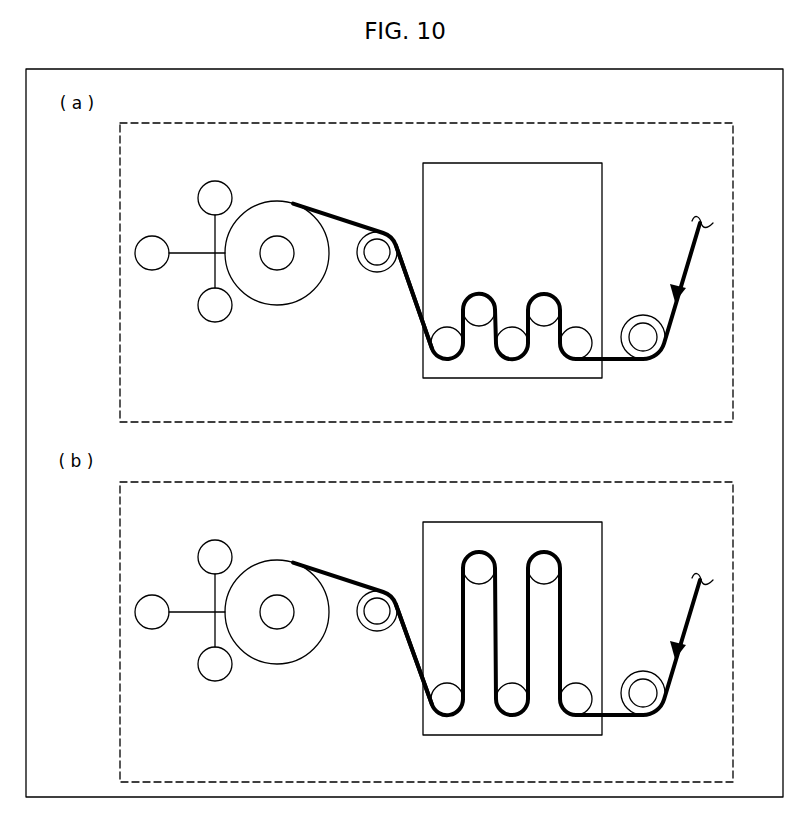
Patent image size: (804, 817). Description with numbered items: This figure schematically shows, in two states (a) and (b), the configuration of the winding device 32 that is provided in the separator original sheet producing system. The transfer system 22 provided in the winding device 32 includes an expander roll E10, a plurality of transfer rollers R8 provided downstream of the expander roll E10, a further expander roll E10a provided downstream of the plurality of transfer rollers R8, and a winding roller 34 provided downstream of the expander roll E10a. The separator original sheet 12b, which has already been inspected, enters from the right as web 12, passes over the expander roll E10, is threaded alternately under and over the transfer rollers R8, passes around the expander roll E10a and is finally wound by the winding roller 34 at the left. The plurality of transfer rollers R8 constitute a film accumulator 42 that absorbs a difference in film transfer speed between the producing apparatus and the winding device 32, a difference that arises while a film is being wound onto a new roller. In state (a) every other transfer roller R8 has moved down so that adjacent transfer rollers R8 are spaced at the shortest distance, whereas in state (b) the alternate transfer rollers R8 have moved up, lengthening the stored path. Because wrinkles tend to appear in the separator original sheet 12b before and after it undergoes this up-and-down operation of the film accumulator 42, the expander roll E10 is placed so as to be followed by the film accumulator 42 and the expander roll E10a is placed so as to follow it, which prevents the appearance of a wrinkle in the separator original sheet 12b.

The winding device 32 is at (690, 122).
The film accumulator 42 is at (602, 205).
The winding roller 34 is at (281, 297).
The expander roll E10a is at (378, 273).
The expander roll E10 is at (648, 360).
The transfer rollers R8 is at (480, 302).
The web 12 is at (683, 264).
The separator original sheet 12b is at (413, 250).
The transfer system 22 is at (697, 318).